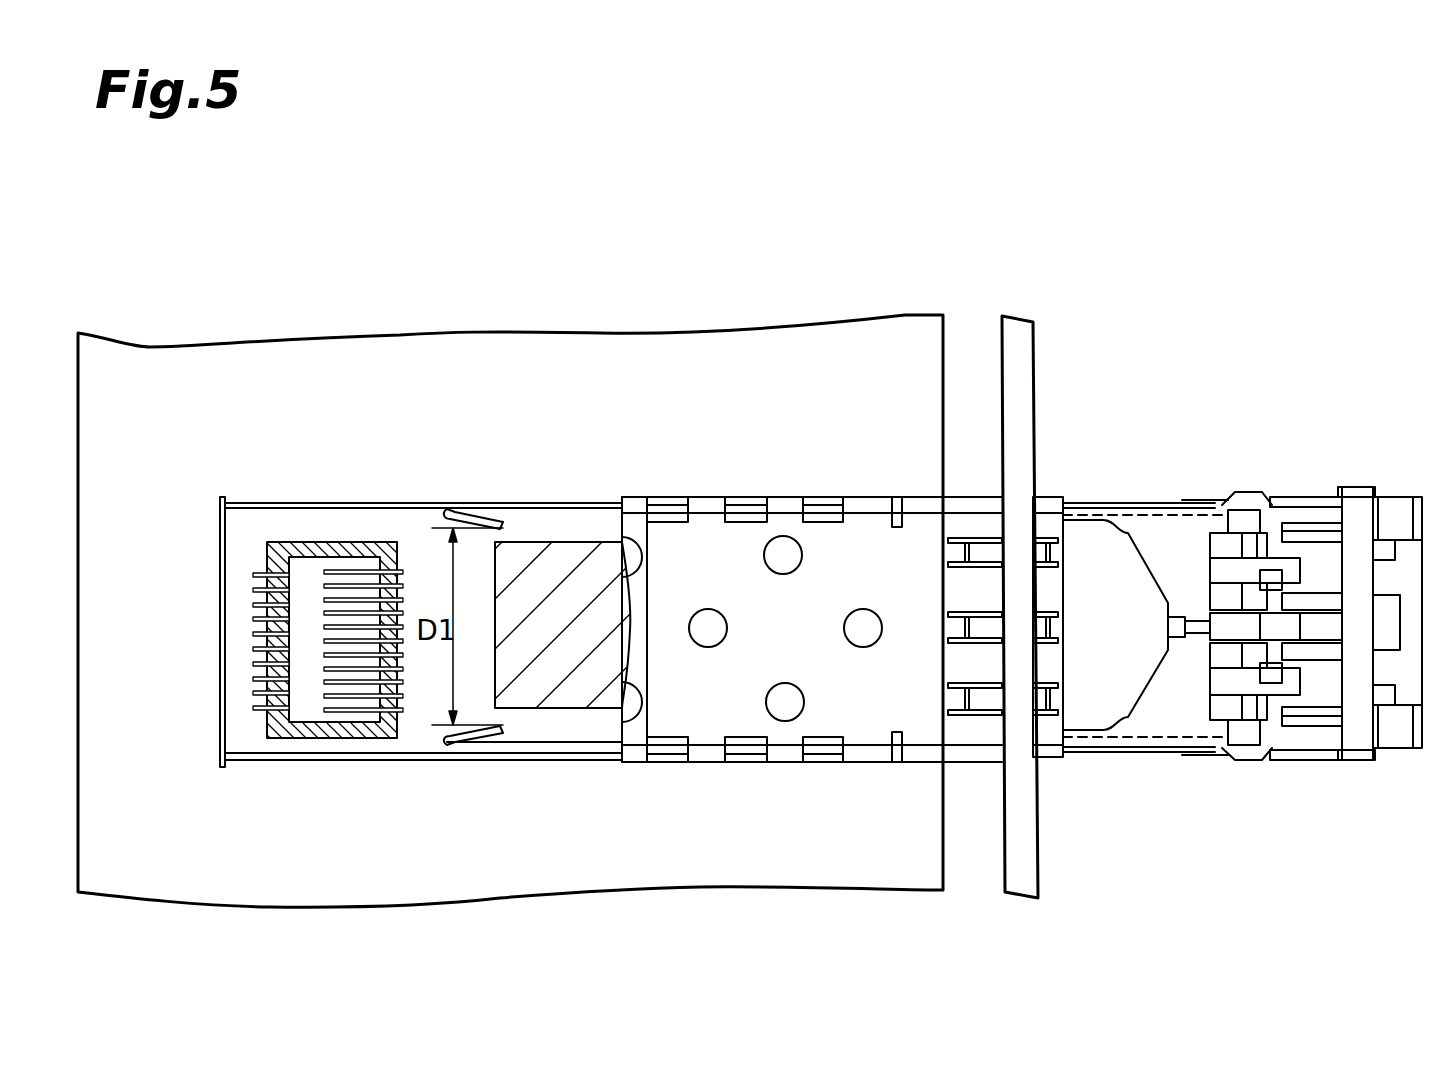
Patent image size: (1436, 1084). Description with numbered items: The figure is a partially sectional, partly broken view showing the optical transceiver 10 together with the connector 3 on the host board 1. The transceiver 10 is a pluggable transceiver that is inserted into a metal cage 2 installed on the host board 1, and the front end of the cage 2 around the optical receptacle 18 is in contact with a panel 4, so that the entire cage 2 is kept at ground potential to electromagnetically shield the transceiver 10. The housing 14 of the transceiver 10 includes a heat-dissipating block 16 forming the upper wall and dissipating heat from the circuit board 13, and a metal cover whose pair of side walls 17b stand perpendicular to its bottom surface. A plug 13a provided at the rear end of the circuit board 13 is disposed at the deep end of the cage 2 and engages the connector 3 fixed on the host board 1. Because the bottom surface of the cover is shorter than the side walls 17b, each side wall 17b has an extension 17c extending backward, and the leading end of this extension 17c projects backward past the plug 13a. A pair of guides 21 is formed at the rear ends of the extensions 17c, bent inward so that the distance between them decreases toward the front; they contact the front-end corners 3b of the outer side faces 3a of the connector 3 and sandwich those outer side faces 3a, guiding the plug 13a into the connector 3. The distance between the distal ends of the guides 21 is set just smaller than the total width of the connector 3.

The host board 1 is at (855, 373).
The metal cage 2 is at (782, 520).
The connector 3 is at (328, 633).
The outer side faces 3a is at (358, 540).
The front-end corners 3b is at (398, 539).
The panel 4 is at (1021, 338).
The optical transceiver 10 is at (1278, 407).
The circuit board 13 is at (544, 558).
The plug 13a is at (503, 622).
The housing 14 is at (1190, 762).
The heat-dissipating block 16 is at (1100, 572).
The side walls 17b is at (1182, 500).
The extension 17c is at (537, 507).
The optical receptacle 18 is at (1402, 747).
The guides 21 is at (475, 510).